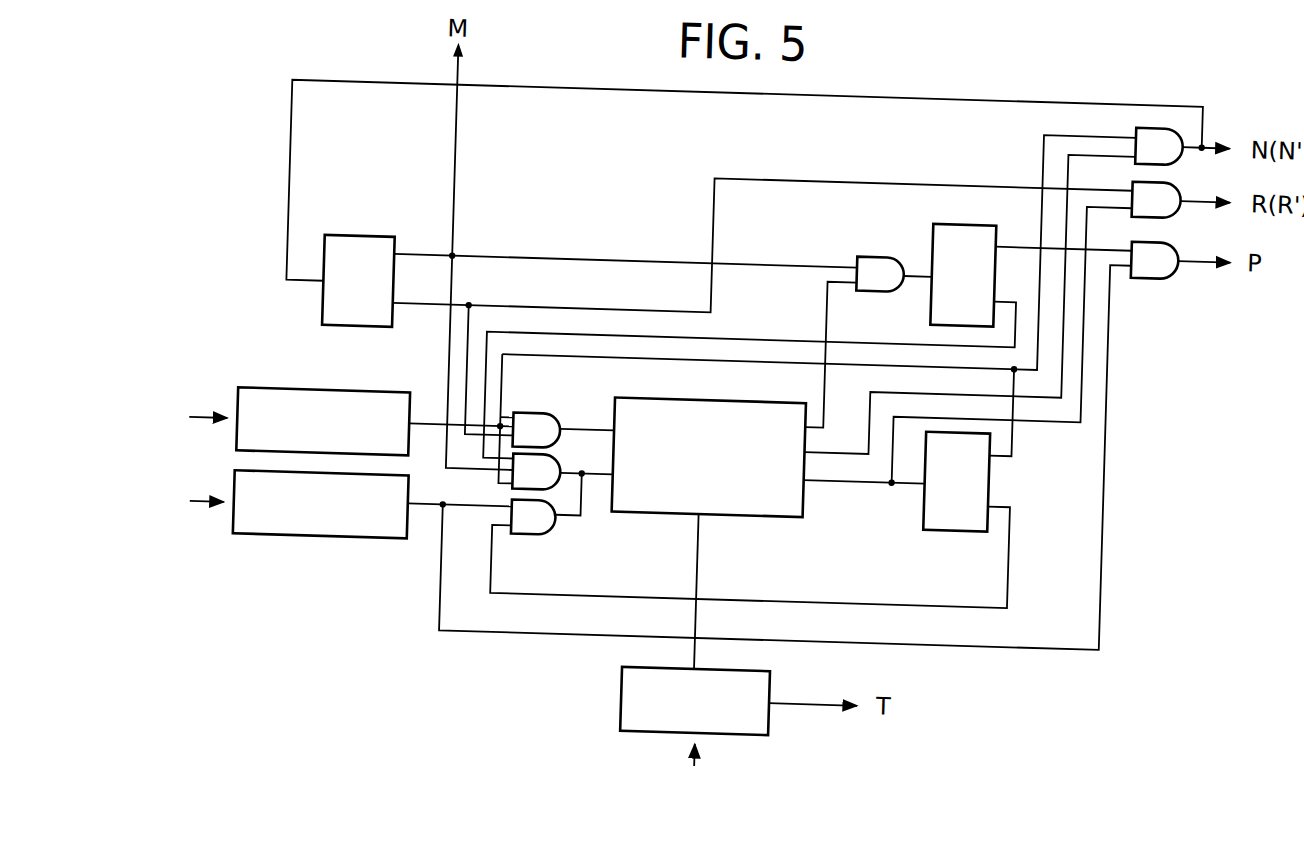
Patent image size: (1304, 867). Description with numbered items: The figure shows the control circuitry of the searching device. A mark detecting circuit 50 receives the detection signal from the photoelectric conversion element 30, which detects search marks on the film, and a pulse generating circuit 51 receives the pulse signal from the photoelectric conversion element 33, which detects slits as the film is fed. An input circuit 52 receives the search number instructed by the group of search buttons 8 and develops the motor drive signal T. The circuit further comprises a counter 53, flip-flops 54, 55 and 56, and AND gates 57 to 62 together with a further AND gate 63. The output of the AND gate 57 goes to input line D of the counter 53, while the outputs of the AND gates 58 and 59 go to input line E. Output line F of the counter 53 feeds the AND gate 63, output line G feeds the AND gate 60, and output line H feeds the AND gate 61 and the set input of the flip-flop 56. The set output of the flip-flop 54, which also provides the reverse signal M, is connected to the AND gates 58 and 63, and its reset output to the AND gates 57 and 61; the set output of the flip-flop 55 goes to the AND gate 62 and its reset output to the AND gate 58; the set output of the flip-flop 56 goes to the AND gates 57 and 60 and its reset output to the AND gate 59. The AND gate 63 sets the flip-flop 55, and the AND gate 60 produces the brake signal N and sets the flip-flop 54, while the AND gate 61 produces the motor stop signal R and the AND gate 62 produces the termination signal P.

The group of search buttons 8 is at (692, 769).
The photoelectric conversion element 30 is at (188, 506).
The photoelectric conversion element 33 is at (189, 421).
The mark detecting circuit 50 is at (312, 548).
The pulse generating circuit 51 is at (283, 400).
The input circuit 52 is at (630, 697).
The counter 53 is at (745, 517).
The flip-flop 54 is at (365, 245).
The flip-flop 55 is at (925, 222).
The flip-flop 56 is at (992, 472).
The AND gate 57 is at (546, 418).
The AND gate 58 is at (565, 470).
The AND gate 59 is at (559, 532).
The AND gate 60 is at (1130, 120).
The AND gate 61 is at (1177, 182).
The AND gate 62 is at (1178, 241).
The AND gate 63 is at (858, 252).